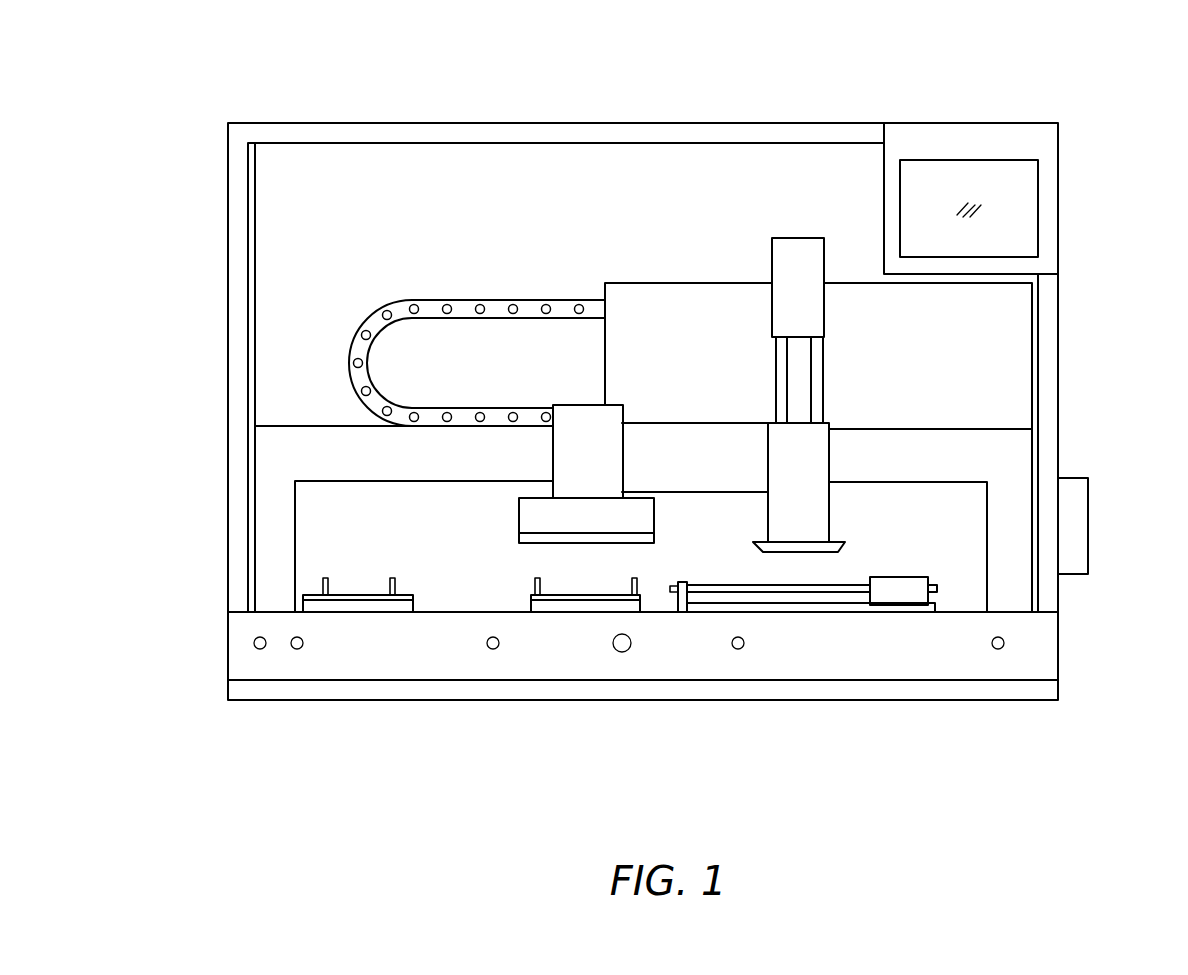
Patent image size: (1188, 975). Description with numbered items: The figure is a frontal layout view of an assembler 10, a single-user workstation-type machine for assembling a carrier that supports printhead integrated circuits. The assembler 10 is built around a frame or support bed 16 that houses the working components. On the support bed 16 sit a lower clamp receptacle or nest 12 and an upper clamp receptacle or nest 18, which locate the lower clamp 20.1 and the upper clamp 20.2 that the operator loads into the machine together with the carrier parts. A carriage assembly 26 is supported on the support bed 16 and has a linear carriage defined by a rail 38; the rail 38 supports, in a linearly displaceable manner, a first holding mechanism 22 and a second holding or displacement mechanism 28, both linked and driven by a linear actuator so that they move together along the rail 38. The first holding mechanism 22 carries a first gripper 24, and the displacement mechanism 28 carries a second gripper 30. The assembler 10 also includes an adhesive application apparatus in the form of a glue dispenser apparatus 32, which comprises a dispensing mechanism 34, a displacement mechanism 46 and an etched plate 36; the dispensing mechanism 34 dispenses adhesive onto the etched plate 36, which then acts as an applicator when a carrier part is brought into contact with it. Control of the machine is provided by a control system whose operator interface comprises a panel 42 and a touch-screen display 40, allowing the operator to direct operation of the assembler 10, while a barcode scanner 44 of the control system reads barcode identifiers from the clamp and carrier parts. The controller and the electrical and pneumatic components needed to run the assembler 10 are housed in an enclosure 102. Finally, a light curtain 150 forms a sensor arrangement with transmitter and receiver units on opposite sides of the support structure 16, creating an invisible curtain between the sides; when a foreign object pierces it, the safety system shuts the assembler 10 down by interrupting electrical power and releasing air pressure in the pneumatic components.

The assembler 10 is at (458, 84).
The light curtain 150 is at (253, 168).
The panel 42 is at (426, 648).
The glue dispenser apparatus 32 is at (882, 650).
The touch-screen display 40 is at (925, 143).
The enclosure 102 is at (818, 447).
The rail 38 is at (316, 450).
The carriage assembly 26 is at (695, 457).
The first holding mechanism 22 is at (578, 432).
The first gripper 24 is at (550, 540).
The displacement mechanism 28 is at (793, 262).
The second gripper 30 is at (795, 548).
The upper clamp receptacle 18 is at (355, 606).
The upper clamp 20.2 is at (323, 580).
The support bed 16 is at (455, 611).
The lower clamp receptacle 12 is at (603, 606).
The lower clamp 20.1 is at (640, 588).
The displacement mechanism 46 is at (680, 607).
The etched plate 36 is at (747, 607).
The dispensing mechanism 34 is at (907, 592).
The barcode scanner 44 is at (1077, 500).